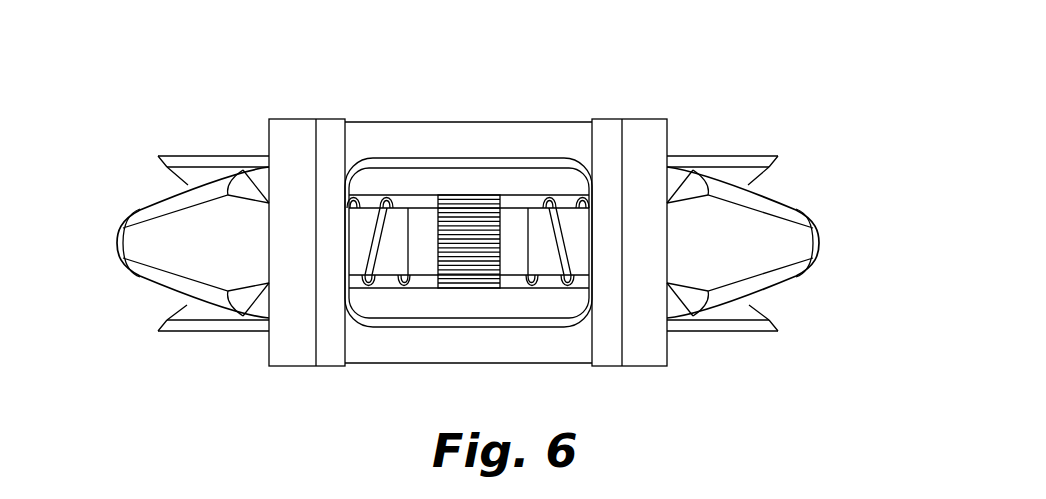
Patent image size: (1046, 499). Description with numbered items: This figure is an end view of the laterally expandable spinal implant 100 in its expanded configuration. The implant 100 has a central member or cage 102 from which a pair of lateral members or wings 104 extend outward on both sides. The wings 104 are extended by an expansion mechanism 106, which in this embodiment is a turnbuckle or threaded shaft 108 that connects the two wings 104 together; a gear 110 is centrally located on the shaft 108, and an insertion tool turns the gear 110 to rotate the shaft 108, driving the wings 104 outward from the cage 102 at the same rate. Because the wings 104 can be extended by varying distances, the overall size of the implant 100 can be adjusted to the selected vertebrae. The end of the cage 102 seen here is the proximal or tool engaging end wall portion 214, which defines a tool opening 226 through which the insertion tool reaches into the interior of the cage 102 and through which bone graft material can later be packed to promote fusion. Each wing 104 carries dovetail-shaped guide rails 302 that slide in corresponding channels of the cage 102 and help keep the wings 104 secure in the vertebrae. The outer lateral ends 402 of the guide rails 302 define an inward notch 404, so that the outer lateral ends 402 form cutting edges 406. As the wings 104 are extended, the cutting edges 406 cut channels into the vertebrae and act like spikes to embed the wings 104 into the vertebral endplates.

The laterally expandable spinal implant 100 is at (612, 52).
The cage 102 is at (398, 137).
The wings 104 is at (135, 247).
The expansion mechanism 106 is at (500, 174).
The threaded shaft 108 is at (463, 207).
The gear 110 is at (472, 255).
The proximal end wall portion 214 is at (572, 345).
The tool opening 226 is at (377, 314).
The guide rails 302 is at (207, 155).
The outer lateral ends 402 is at (167, 155).
The inward notch 404 is at (162, 305).
The cutting edges 406 is at (163, 166).